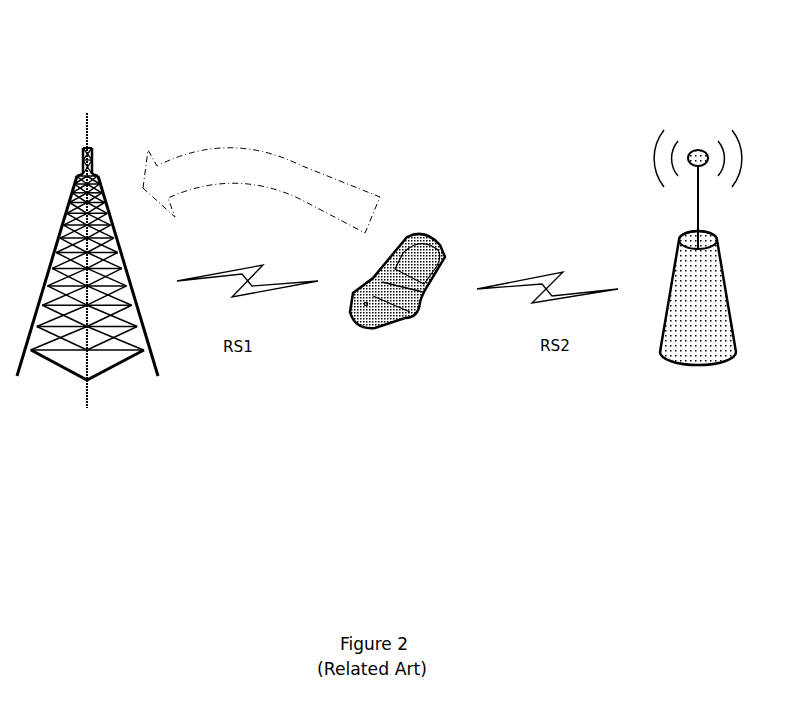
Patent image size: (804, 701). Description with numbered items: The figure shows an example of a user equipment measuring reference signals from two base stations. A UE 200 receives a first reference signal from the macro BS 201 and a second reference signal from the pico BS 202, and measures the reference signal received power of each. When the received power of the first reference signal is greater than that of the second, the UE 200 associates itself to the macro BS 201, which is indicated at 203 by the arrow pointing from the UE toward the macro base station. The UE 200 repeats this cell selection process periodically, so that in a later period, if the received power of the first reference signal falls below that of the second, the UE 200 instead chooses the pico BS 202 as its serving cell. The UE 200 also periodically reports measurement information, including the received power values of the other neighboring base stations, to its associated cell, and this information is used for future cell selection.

The UE 200 is at (442, 238).
The macro BS 201 is at (87, 113).
The pico BS 202 is at (652, 153).
The association to the macro BS 203 is at (243, 145).